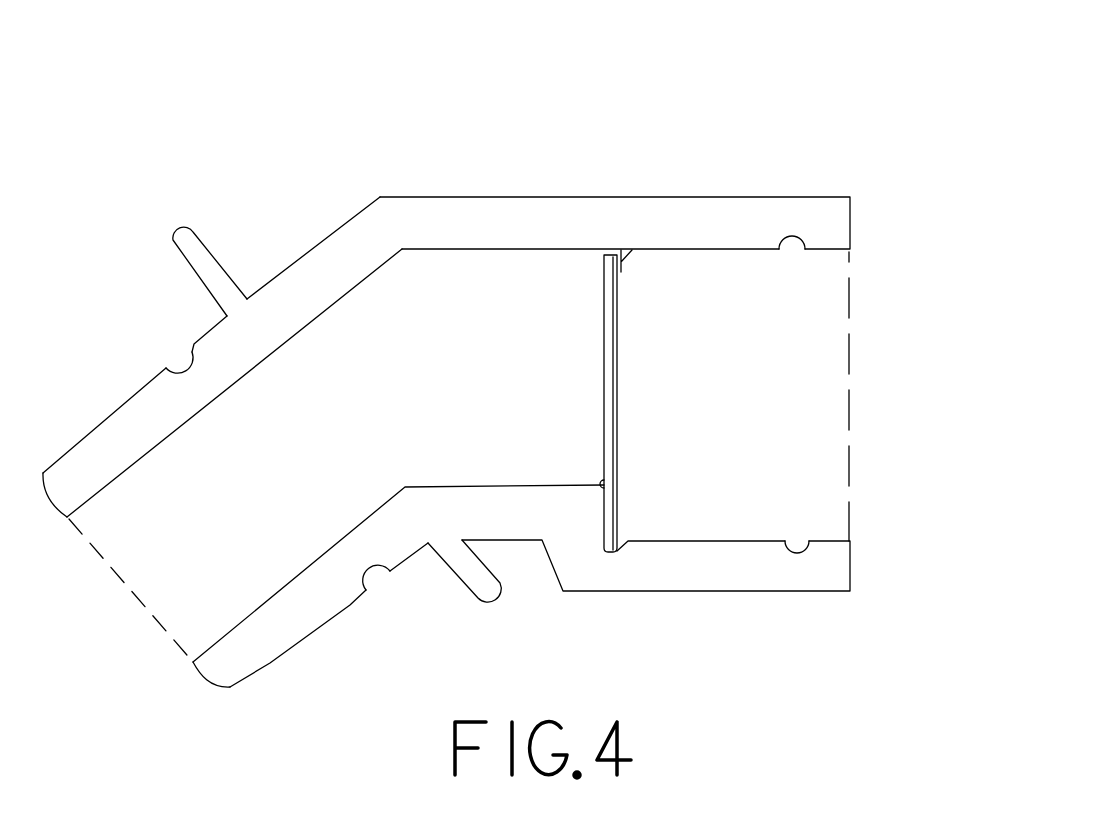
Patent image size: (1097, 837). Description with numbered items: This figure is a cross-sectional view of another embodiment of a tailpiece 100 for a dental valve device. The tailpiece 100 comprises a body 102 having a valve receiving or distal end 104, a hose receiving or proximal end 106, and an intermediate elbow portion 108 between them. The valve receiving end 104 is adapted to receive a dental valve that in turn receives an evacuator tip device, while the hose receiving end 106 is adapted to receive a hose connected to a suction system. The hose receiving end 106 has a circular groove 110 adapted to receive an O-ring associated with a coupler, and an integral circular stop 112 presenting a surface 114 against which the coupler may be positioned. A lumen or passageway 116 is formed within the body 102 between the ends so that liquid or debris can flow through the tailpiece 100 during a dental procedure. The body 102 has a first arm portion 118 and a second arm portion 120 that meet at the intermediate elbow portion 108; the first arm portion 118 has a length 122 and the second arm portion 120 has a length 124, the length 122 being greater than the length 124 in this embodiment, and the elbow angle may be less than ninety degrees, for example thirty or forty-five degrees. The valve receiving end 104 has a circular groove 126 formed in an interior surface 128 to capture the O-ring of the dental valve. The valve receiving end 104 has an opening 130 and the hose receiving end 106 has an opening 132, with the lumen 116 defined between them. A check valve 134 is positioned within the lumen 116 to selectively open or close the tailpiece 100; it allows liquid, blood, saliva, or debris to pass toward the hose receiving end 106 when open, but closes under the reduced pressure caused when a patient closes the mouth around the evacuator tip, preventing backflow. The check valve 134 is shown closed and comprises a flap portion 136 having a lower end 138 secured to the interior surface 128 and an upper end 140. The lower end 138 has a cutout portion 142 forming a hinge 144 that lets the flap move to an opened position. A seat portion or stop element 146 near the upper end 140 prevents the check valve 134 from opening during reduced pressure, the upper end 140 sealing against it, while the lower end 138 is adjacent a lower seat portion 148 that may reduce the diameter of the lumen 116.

The tailpiece 100 is at (516, 89).
The body 102 is at (582, 172).
The valve receiving end 104 is at (891, 312).
The hose receiving end 106 is at (115, 640).
The intermediate elbow portion 108 is at (365, 167).
The circular groove 110 is at (177, 363).
The integral circular stop 112 is at (192, 228).
The surface 114 is at (197, 277).
The lumen 116 is at (452, 288).
The first arm portion 118 is at (682, 197).
The second arm portion 120 is at (298, 293).
The length 122 is at (515, 197).
The length 124 is at (327, 233).
The circular groove 126 is at (790, 252).
The interior surface 128 is at (725, 251).
The opening 130 is at (837, 385).
The opening 132 is at (117, 551).
The check valve 134 is at (670, 373).
The flap portion 136 is at (604, 370).
The lower end 138 is at (635, 502).
The upper end 140 is at (601, 264).
The cutout portion 142 is at (603, 483).
The hinge 144 is at (617, 480).
The stop element 146 is at (623, 265).
The lower seat portion 148 is at (597, 515).